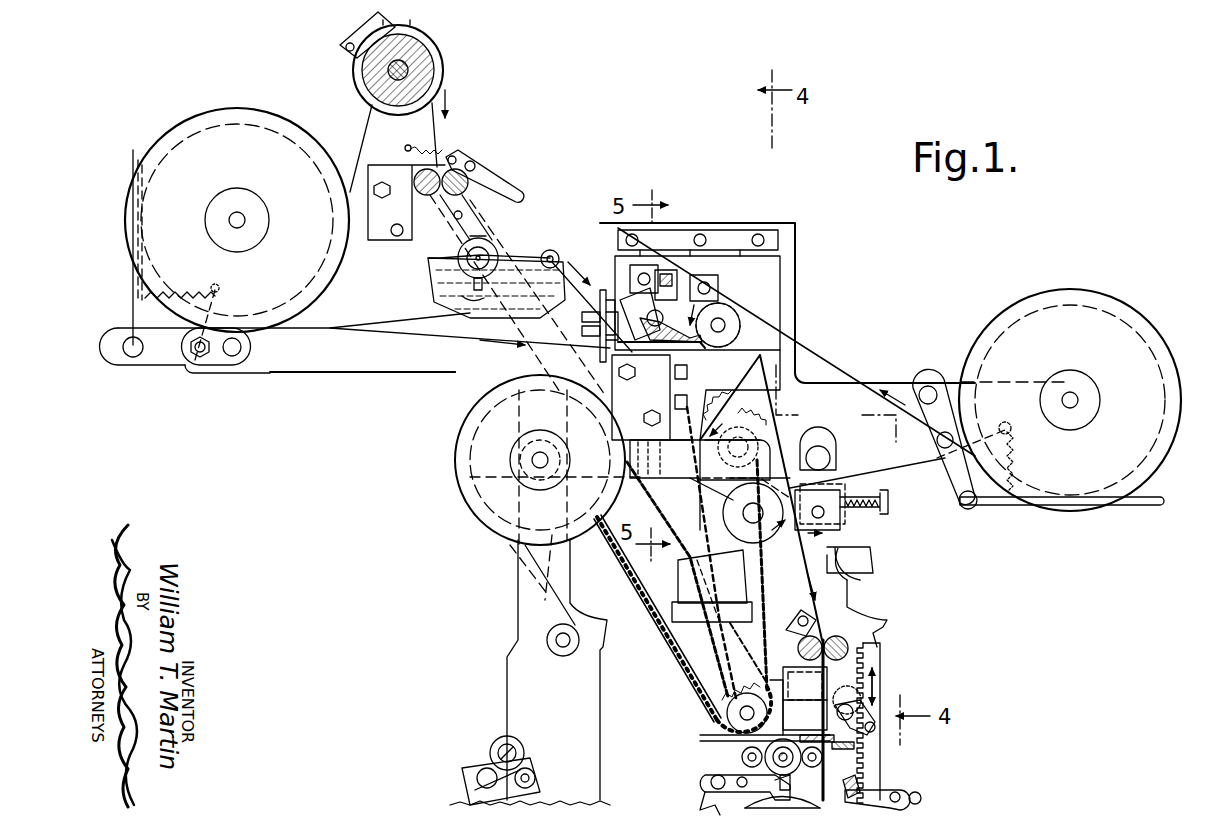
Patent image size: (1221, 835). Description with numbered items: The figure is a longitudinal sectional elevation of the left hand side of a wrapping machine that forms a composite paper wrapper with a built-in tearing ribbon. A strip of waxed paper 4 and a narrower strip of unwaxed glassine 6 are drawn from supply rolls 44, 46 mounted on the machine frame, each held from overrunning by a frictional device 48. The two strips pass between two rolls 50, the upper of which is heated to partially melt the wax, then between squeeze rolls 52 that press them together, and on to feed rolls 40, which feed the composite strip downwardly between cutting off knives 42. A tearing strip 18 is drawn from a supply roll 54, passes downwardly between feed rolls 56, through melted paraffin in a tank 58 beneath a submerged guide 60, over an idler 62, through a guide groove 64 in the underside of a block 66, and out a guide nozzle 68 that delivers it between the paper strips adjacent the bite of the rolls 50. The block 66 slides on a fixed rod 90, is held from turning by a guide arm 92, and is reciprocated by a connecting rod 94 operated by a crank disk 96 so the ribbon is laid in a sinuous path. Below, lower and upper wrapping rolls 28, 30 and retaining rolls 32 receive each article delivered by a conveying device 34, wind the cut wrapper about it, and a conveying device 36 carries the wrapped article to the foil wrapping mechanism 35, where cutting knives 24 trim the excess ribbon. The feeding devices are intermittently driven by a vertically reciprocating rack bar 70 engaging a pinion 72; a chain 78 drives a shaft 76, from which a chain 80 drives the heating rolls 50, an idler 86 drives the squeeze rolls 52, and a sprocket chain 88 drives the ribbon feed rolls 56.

The strip of waxed paper 4 is at (362, 330).
The strip of unwaxed paper or glassine 6 is at (836, 374).
The tearing strip 18 is at (440, 133).
The cutting knives 24 is at (458, 783).
The lower wrapping roll 28 is at (808, 797).
The upper wrapping roll 30 is at (722, 739).
The retaining rolls 32 is at (742, 758).
The conveying device 34 is at (906, 790).
The foil wrapping mechanism 35 is at (492, 745).
The conveying device 36 is at (705, 776).
The feed rolls 40 is at (845, 642).
The cutting off knives 42 is at (836, 740).
The supply roll 44 is at (243, 110).
The supply roll 46 is at (1152, 328).
The frictional device 48 is at (133, 150).
The rolls 50 is at (738, 326).
The squeeze rolls 52 is at (782, 538).
The supply roll 54 is at (435, 60).
The feed rolls 56 is at (462, 190).
The tank 58 is at (430, 300).
The guide 60 is at (476, 300).
The idler 62 is at (555, 250).
The guide groove 64 is at (664, 352).
The block 66 is at (640, 300).
The guide nozzle 68 is at (710, 340).
The rack bar 70 is at (882, 655).
The pinion 72 is at (880, 690).
The shaft 76 is at (738, 713).
The chain 78 is at (838, 700).
The chain 80 is at (724, 650).
The idler 86 is at (770, 442).
The sprocket chain 88 is at (625, 575).
The fixed rod 90 is at (665, 318).
The guide arm 92 is at (664, 276).
The connecting rod 94 is at (590, 328).
The crank disk 96 is at (600, 352).